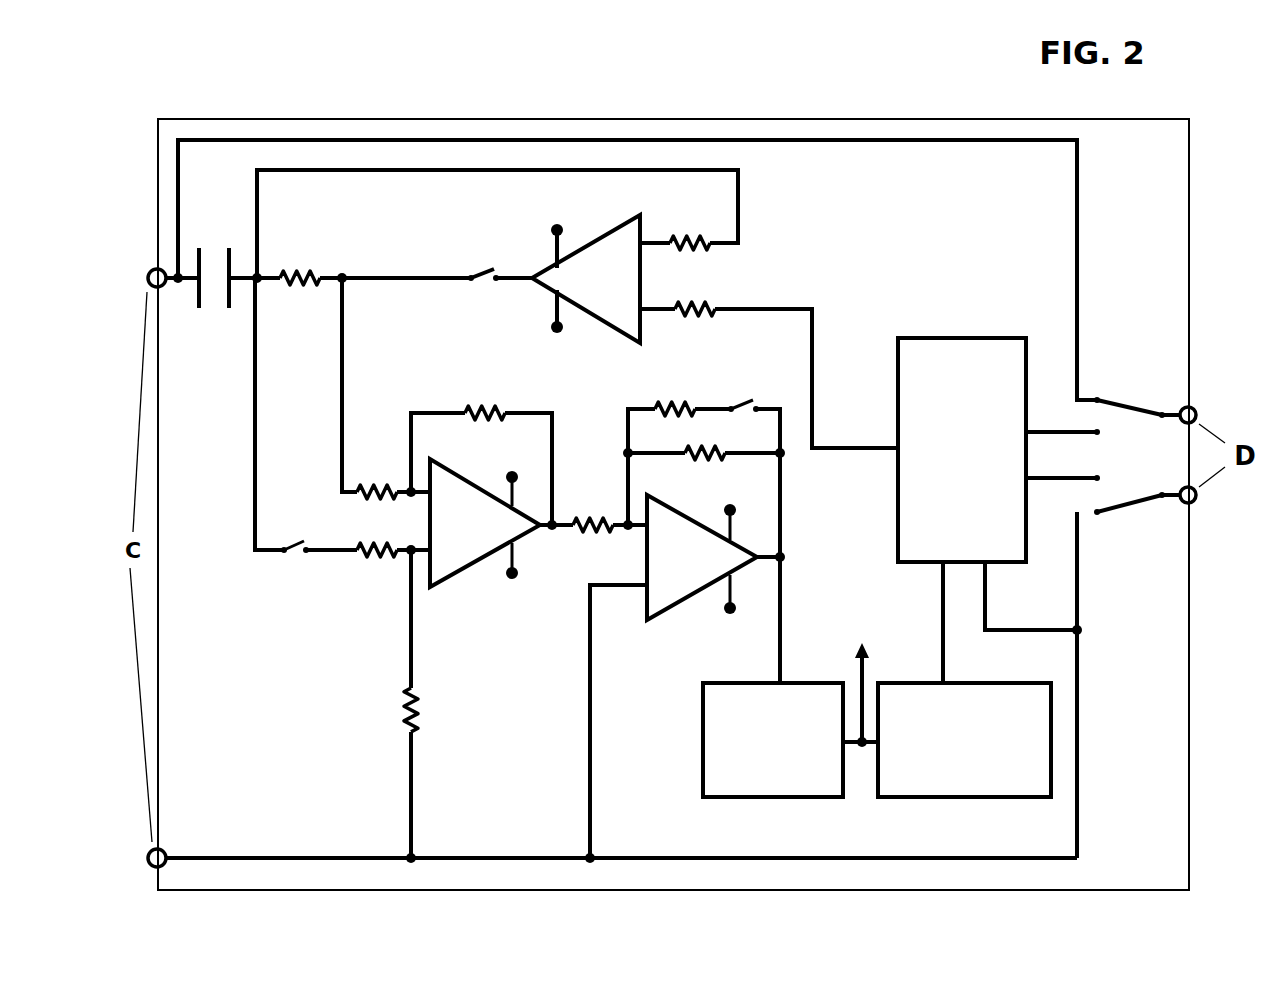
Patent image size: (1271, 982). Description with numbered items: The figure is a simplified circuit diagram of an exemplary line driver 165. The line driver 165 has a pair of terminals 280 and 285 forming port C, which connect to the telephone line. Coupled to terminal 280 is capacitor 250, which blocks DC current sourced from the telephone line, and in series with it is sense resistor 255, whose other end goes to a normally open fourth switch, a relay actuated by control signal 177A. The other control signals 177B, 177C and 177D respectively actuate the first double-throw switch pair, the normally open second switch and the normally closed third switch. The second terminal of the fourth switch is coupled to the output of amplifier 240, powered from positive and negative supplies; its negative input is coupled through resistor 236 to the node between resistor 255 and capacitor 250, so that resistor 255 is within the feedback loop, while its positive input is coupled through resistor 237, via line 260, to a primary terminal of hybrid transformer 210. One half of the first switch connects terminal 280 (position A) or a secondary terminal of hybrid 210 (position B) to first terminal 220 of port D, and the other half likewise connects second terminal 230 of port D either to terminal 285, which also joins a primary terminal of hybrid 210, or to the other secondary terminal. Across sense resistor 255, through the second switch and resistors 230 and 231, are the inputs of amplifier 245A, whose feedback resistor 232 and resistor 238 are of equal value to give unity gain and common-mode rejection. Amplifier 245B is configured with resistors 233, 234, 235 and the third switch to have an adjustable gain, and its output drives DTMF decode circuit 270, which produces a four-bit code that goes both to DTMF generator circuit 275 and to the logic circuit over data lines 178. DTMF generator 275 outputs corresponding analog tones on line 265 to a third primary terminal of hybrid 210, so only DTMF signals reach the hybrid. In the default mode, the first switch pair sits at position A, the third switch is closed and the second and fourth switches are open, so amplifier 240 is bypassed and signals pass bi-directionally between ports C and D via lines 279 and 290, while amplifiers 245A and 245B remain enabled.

The line driver 165 is at (607, 121).
The control signal 177A is at (478, 255).
The control signal 177B is at (293, 570).
The control signal 177C is at (746, 388).
The control signal 177D is at (1140, 432).
The data lines 178 is at (866, 672).
The hybrid transformer 210 is at (1000, 450).
The first terminal of port D 220 is at (1197, 401).
The second terminal of port D / resistor 230 is at (1225, 542).
The resistor 231 is at (368, 541).
The feedback resistor 232 is at (481, 455).
The resistor 233 is at (704, 532).
The resistor 234 is at (704, 443).
The resistor 235 is at (610, 515).
The resistor 236 is at (497, 224).
The resistor 237 is at (769, 365).
The resistor 238 is at (393, 706).
The amplifier 240 is at (583, 284).
The amplifier 245A is at (501, 531).
The amplifier 245B is at (685, 671).
The capacitor 250 is at (239, 293).
The sense resistor 255 is at (361, 281).
The line 260 is at (814, 398).
The line 265 is at (938, 628).
The DTMF decode circuit 270 is at (773, 740).
The DTMF generator circuit 275 is at (964, 740).
The line 279 is at (1011, 139).
The terminal 280 is at (149, 270).
The terminal 285 is at (149, 848).
The line 290 is at (342, 858).